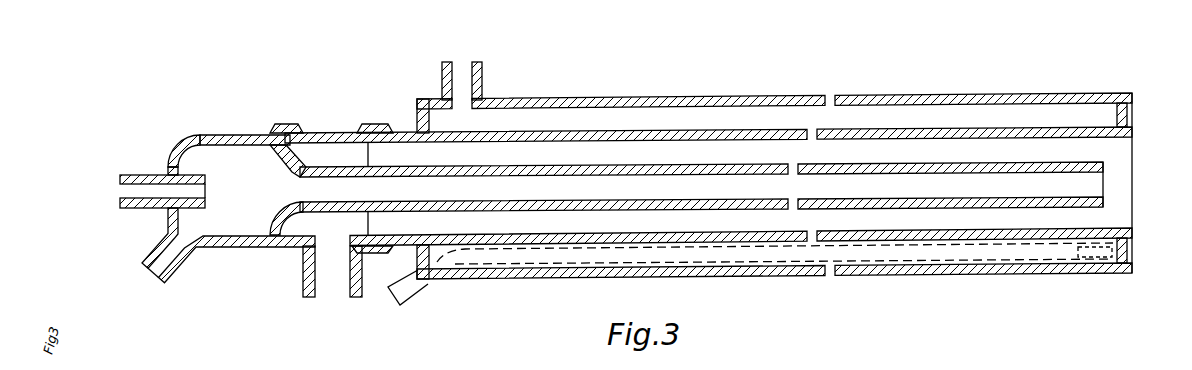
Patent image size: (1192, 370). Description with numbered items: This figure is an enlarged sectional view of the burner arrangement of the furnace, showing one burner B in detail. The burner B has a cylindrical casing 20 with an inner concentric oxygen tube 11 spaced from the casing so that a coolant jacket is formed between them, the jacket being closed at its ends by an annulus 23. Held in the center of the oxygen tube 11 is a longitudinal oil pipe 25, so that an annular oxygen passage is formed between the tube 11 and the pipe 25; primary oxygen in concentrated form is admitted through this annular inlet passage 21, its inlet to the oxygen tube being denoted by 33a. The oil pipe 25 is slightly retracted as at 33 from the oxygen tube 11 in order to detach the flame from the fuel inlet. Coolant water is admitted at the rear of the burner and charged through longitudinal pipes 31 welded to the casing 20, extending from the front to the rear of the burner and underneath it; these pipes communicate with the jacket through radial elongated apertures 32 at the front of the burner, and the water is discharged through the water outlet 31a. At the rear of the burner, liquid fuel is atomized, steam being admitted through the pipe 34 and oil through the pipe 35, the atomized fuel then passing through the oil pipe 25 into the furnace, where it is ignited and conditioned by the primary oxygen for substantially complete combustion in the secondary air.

The oil pipe 35 is at (125, 175).
The steam pipe 34 is at (187, 263).
The oxygen tube inlet 33a is at (325, 270).
The retraction of oil pipe 33 is at (1107, 202).
The annular inlet passage 21 is at (592, 223).
The oxygen tube 11 is at (1048, 127).
The oil pipe 25 is at (1085, 162).
The burner B is at (702, 96).
The cylindrical casing 20 is at (945, 93).
The annulus 23 is at (417, 118).
The water outlet 31a is at (483, 72).
The coolant pipe 31 is at (417, 288).
The radial elongated aperture 32 is at (1070, 273).